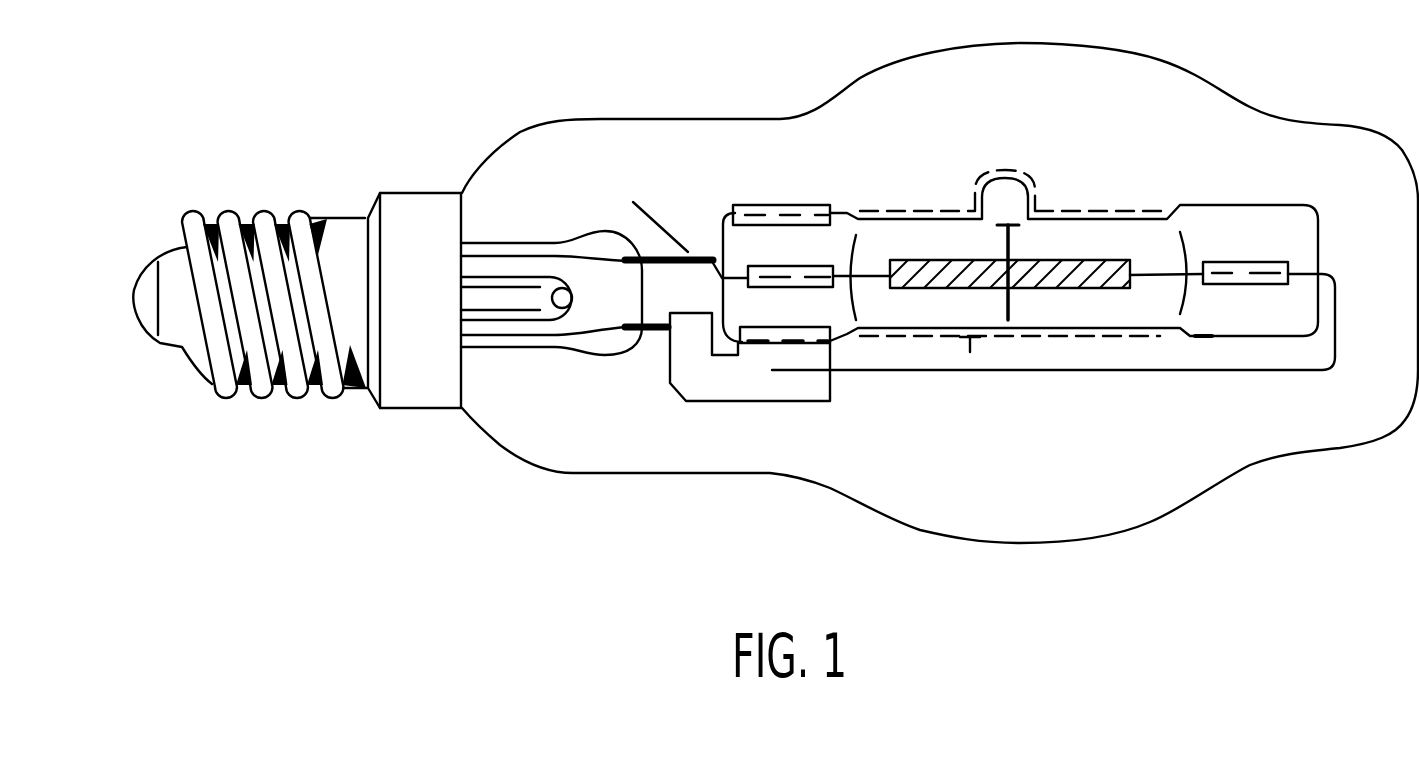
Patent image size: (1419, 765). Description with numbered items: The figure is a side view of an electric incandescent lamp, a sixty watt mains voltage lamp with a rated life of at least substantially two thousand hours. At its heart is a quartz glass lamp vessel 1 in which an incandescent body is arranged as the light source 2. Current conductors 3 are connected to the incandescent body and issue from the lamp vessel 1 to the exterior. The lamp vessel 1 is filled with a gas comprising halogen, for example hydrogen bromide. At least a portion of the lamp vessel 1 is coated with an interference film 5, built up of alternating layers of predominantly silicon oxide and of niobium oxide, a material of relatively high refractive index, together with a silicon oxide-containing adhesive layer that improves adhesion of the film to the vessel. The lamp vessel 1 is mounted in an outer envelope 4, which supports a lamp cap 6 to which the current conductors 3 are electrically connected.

The lamp vessel 1 is at (1143, 204).
The light source 2 is at (1098, 290).
The current conductors 3 is at (880, 280).
The outer envelope 4 is at (672, 119).
The interference film 5 is at (967, 362).
The lamp cap 6 is at (347, 232).